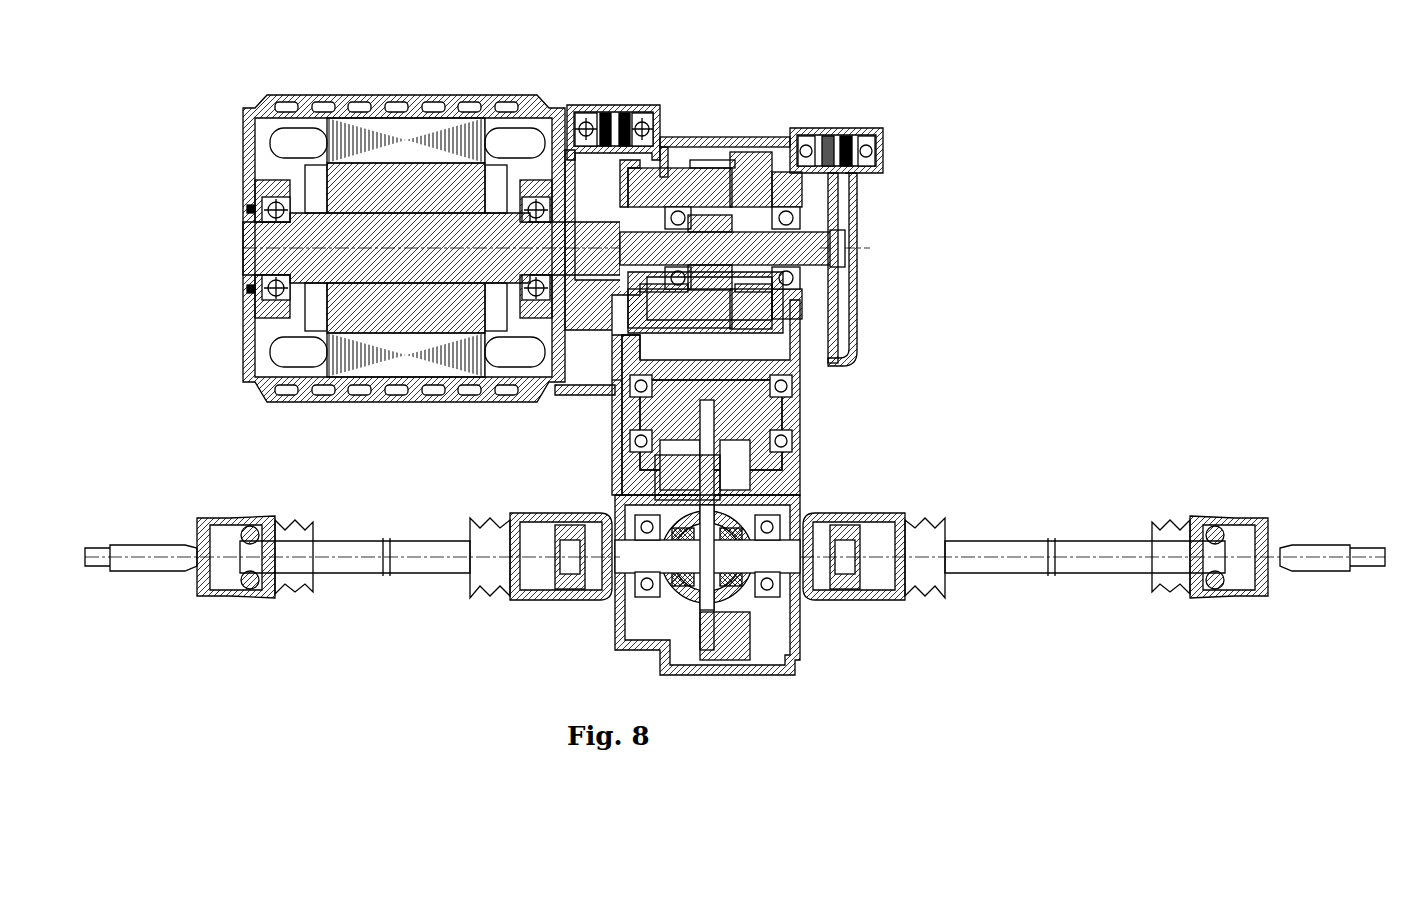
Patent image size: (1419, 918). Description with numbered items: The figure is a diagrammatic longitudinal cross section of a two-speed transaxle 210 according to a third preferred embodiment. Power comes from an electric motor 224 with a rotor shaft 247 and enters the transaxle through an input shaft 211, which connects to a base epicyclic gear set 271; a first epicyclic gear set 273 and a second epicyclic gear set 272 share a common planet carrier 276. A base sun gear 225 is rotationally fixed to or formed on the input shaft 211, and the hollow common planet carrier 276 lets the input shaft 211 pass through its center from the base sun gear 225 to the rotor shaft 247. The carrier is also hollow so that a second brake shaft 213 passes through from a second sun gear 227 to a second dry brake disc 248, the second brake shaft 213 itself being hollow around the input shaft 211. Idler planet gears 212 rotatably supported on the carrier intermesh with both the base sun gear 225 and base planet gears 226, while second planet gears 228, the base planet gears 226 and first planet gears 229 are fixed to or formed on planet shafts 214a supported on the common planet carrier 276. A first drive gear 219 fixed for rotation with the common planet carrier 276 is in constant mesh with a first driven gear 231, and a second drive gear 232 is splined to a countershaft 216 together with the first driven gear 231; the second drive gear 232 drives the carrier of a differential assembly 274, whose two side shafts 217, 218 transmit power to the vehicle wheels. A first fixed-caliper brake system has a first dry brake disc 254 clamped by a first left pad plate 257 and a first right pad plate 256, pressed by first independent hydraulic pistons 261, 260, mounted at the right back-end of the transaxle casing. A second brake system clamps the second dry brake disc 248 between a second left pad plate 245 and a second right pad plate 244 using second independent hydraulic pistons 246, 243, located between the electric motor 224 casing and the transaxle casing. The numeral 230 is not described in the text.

The two-speed transaxle 210 is at (265, 97).
The electric motor 224 is at (400, 95).
The input shaft 211 is at (540, 213).
The rotor shaft 247 is at (243, 231).
The first independent hydraulic piston 261 is at (577, 106).
The first left pad plate 257 is at (608, 112).
The first right pad plate 256 is at (628, 112).
The first independent hydraulic piston 260 is at (655, 106).
The first drive gear 219 is at (668, 165).
The first planet gears 229 is at (678, 168).
The base planet gears 226 is at (712, 160).
The planet shafts 214a is at (733, 152).
The second planet gears 228 is at (777, 172).
The second independent hydraulic piston 246 is at (801, 135).
The second left pad plate 245 is at (828, 134).
The second right pad plate 244 is at (850, 130).
The second independent hydraulic piston 243 is at (875, 128).
The idler planet gears 212 is at (838, 207).
The second brake shaft 213 is at (838, 235).
The second sun gear 227 is at (776, 268).
The base sun gear 225 is at (857, 273).
The second drive gear 232 is at (745, 366).
The second dry brake disc 248 is at (845, 368).
The countershaft 216 is at (782, 425).
The housing wall 230 is at (604, 330).
The second epicyclic gear set 272 is at (668, 294).
The base epicyclic gear set 271 is at (712, 292).
The first epicyclic gear set 273 is at (757, 293).
The common planet carrier 276 is at (718, 334).
The first dry brake disc 254 is at (630, 342).
The first driven gear 231 is at (614, 392).
The differential assembly 274 is at (677, 493).
The side shaft 217 is at (420, 543).
The side shaft 218 is at (1018, 543).